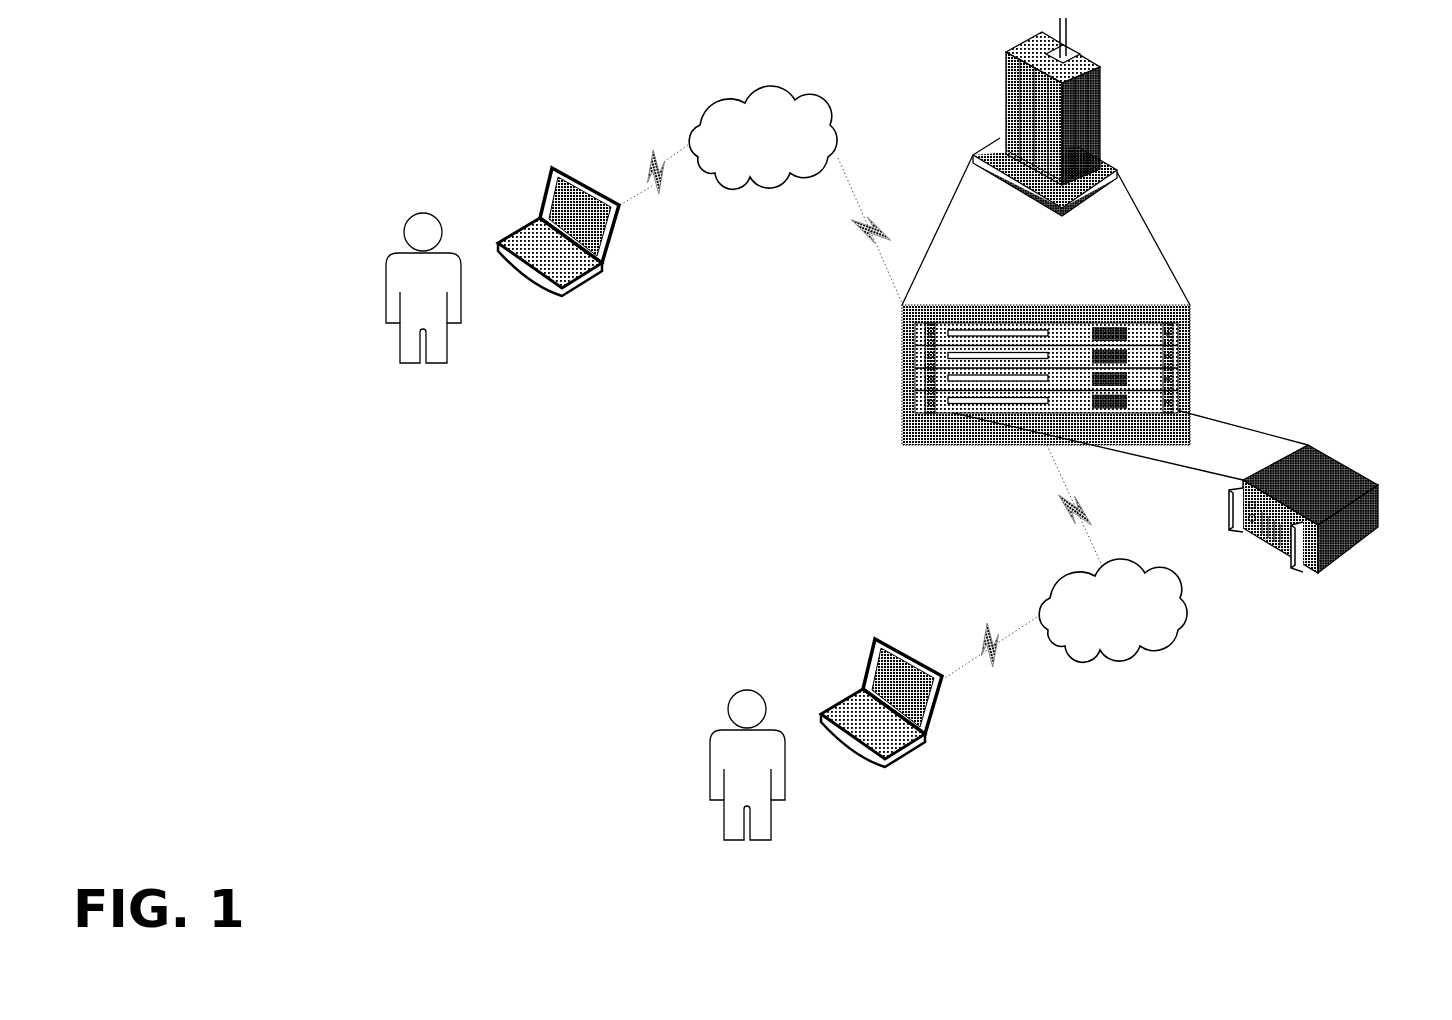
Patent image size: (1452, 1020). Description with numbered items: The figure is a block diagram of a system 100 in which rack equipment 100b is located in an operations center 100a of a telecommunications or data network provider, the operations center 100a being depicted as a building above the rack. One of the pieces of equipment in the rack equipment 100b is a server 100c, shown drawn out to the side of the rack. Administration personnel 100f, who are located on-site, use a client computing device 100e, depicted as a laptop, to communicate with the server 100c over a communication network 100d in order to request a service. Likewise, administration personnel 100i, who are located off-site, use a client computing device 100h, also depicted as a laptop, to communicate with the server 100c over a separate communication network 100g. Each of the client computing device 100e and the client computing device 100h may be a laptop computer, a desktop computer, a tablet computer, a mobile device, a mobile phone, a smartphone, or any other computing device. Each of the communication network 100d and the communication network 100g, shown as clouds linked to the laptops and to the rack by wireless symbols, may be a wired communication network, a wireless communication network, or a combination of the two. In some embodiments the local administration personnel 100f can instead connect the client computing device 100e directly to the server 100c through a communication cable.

The system 100 is at (778, 448).
The operations center 100a is at (1133, 87).
The rack equipment 100b is at (888, 442).
The server 100c is at (1360, 542).
The communication network 100d is at (1113, 610).
The client computing device 100e is at (957, 720).
The administration personnel 100f is at (713, 812).
The communication network 100g is at (763, 137).
The client computing device 100h is at (618, 252).
The administration personnel 100i is at (390, 343).